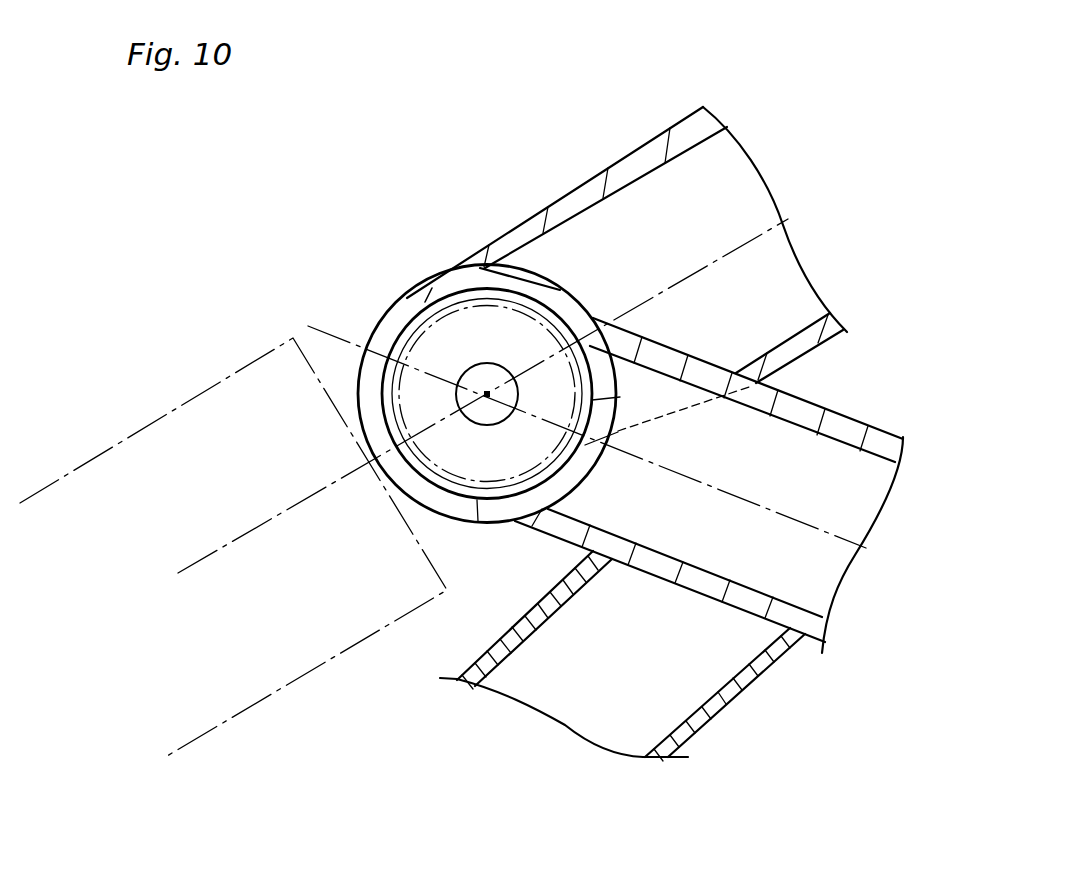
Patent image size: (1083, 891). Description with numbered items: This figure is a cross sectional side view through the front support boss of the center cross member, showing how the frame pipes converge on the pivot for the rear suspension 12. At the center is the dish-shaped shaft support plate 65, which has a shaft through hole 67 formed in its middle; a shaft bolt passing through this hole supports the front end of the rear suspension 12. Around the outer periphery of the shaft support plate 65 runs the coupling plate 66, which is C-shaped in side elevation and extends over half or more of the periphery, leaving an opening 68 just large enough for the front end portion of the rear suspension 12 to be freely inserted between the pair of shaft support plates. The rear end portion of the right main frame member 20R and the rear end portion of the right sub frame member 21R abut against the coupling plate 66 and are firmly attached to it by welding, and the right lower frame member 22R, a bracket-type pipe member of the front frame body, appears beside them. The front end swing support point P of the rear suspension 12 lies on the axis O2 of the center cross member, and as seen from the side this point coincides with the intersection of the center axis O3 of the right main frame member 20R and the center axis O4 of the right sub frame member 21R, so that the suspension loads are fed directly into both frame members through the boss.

The rear suspension 12 is at (252, 365).
The right main frame member 20R is at (633, 157).
The right sub frame member 21R is at (840, 428).
The right lower frame member 22R is at (515, 620).
The shaft support plate 65 is at (377, 328).
The coupling plate 66 is at (437, 290).
The shaft through hole 67 is at (478, 372).
The opening 68 is at (426, 297).
The axis of the center cross member O2 is at (488, 400).
The center axis of the right main frame member O3 is at (747, 240).
The center axis of the right sub frame member O4 is at (733, 492).